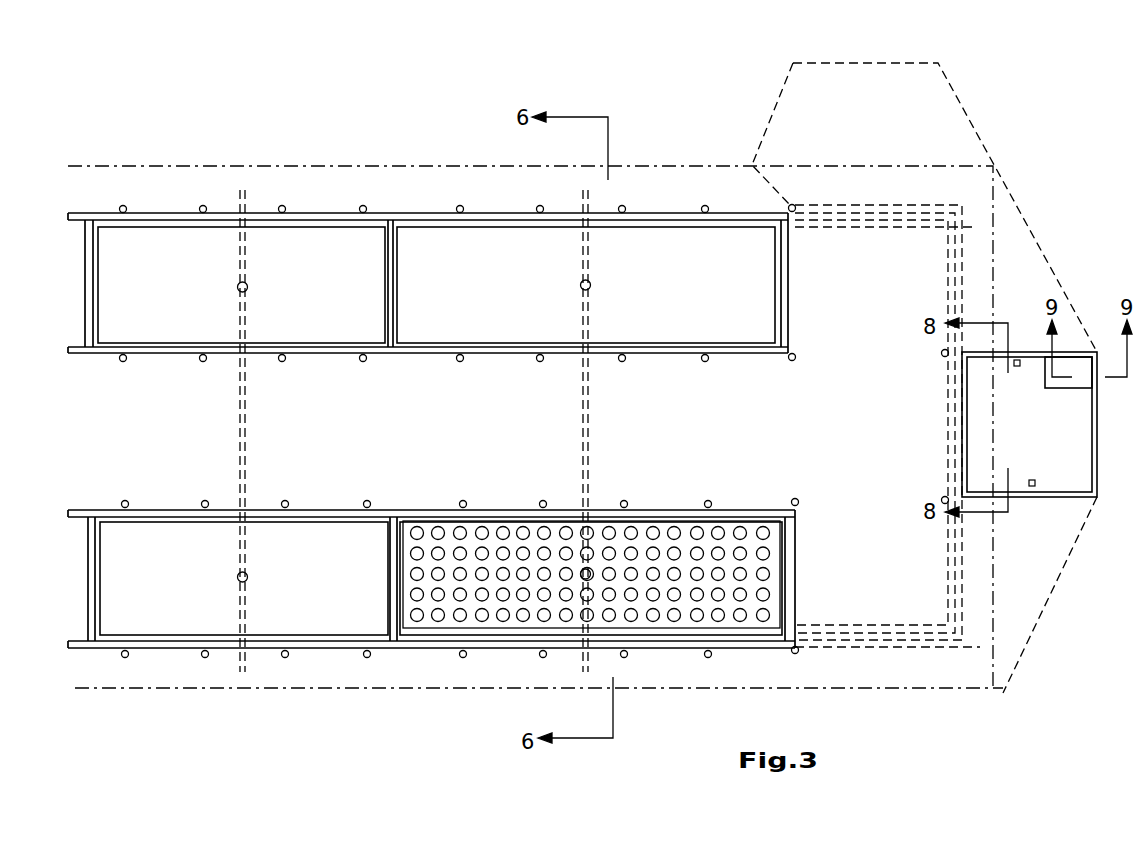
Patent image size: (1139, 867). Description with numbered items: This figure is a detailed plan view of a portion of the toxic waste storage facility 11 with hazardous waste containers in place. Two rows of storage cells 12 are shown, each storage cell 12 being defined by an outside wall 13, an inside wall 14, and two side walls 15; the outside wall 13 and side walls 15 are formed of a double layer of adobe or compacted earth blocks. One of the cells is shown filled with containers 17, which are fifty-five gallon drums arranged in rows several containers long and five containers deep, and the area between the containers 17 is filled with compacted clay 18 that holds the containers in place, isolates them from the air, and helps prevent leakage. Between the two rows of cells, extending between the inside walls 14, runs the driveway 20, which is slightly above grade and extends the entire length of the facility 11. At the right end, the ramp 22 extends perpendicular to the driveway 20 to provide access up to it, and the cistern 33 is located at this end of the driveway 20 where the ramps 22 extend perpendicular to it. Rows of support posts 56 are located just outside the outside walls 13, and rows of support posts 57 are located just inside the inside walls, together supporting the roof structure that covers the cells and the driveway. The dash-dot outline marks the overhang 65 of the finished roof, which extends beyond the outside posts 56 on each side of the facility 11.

The toxic waste storage facility 11 is at (382, 114).
The storage cell 12 is at (740, 470).
The outside wall 13 is at (172, 216).
The inside wall 14 is at (148, 350).
The side wall 15 is at (98, 296).
The container 17 is at (460, 547).
The compacted clay 18 is at (631, 527).
The driveway 20 is at (591, 528).
The ramp 22 is at (924, 402).
The cistern 33 is at (1063, 500).
The support post 56 is at (367, 656).
The support post 57 is at (540, 360).
The overhang 65 is at (507, 162).